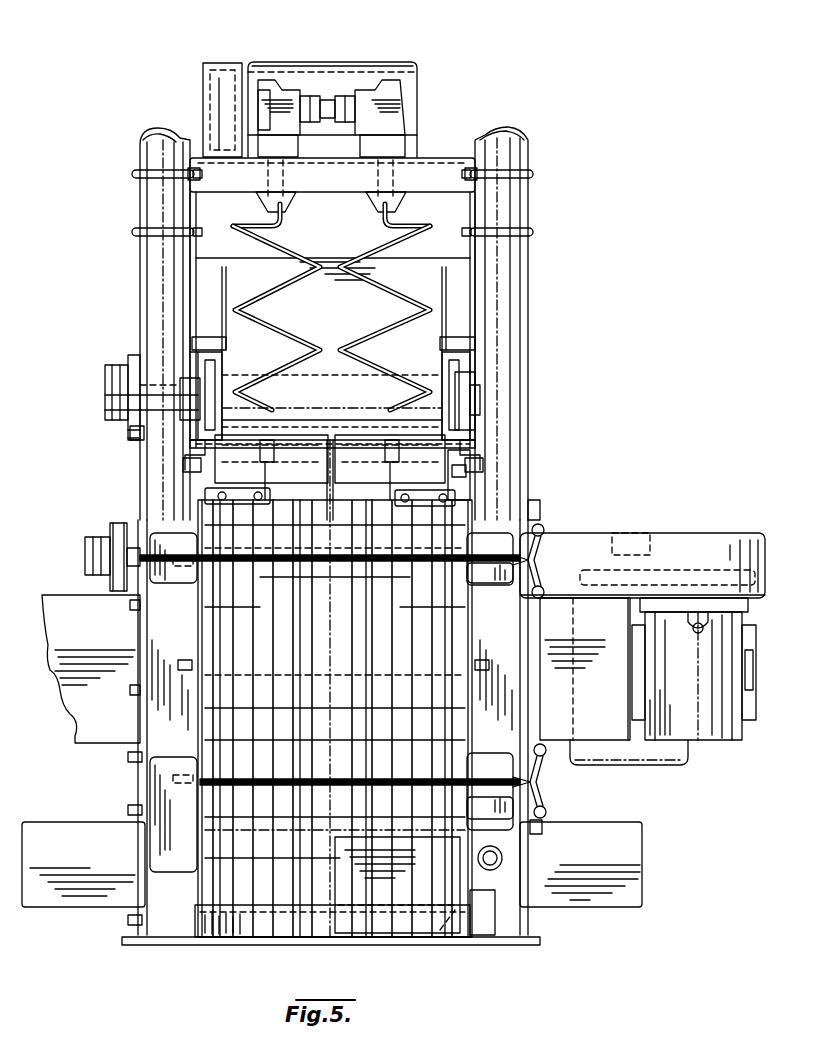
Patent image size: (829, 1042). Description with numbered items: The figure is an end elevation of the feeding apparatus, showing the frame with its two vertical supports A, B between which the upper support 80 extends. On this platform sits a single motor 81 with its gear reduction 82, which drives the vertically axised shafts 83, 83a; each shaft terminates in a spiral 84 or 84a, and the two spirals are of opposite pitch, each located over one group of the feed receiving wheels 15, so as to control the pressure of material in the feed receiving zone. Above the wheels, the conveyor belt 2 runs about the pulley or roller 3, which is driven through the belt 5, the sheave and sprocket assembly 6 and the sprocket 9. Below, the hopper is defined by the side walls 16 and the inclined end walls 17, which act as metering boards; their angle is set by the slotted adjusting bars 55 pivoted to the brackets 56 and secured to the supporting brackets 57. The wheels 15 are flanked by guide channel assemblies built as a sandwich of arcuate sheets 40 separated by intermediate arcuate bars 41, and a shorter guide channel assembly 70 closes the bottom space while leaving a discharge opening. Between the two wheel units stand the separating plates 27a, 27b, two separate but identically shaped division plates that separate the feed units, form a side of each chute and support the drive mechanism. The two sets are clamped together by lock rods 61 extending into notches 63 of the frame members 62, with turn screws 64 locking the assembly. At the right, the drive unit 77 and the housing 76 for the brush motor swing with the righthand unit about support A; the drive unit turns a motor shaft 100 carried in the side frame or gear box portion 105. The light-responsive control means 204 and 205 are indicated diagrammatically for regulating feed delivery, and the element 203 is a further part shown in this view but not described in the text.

The conveyor belt 2 is at (425, 378).
The pulley or roller 3 is at (236, 375).
The belt 5 is at (115, 497).
The sheave and sprocket assembly 6 is at (105, 362).
The sprocket 9 is at (128, 432).
The feed receiving wheels 15 is at (245, 645).
The hopper side walls 16 is at (185, 455).
The hopper end walls 17 is at (290, 498).
The separating plate 27a is at (335, 830).
The separating plate 27b is at (420, 856).
The arcuate sheets 40 is at (215, 720).
The intermediate arcuate bars 41 is at (215, 690).
The slotted adjusting bars 55 is at (430, 450).
The brackets 56 is at (380, 440).
The supporting brackets 57 is at (460, 495).
The lock rods 61 is at (210, 572).
The frame members 62 is at (500, 585).
The notches 63 is at (543, 527).
The turn screws 64 is at (545, 550).
The guide channel assembly 70 is at (248, 930).
The housing 76 is at (630, 852).
The reduction gear or drive unit 77 is at (720, 745).
The upper support 80 is at (450, 160).
The motor 81 is at (345, 66).
The gear reduction 82 is at (278, 95).
The vertically axised shaft 83 is at (258, 190).
The vertically axised shaft 83a is at (378, 190).
The spiral 84 is at (280, 290).
The spiral 84a is at (395, 322).
The motor shaft 100 is at (756, 665).
The side frame or gear box portion 105 is at (68, 718).
The lower dashed member 203 is at (440, 940).
The light-responsive control means 204 is at (455, 337).
The light-responsive control means 205 is at (204, 337).
The vertical support A is at (522, 140).
The vertical support B is at (142, 145).